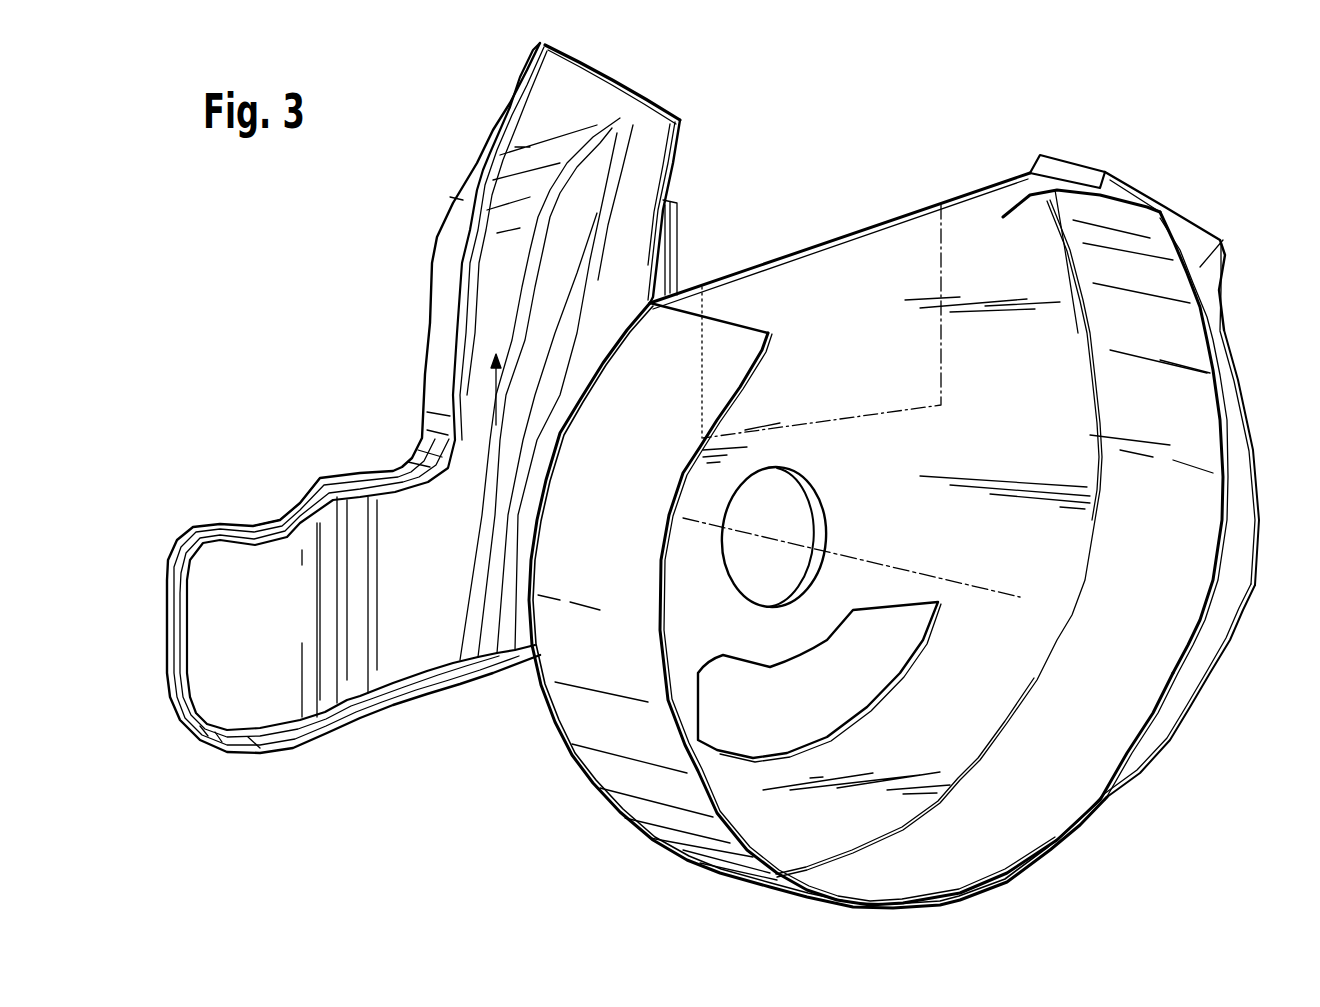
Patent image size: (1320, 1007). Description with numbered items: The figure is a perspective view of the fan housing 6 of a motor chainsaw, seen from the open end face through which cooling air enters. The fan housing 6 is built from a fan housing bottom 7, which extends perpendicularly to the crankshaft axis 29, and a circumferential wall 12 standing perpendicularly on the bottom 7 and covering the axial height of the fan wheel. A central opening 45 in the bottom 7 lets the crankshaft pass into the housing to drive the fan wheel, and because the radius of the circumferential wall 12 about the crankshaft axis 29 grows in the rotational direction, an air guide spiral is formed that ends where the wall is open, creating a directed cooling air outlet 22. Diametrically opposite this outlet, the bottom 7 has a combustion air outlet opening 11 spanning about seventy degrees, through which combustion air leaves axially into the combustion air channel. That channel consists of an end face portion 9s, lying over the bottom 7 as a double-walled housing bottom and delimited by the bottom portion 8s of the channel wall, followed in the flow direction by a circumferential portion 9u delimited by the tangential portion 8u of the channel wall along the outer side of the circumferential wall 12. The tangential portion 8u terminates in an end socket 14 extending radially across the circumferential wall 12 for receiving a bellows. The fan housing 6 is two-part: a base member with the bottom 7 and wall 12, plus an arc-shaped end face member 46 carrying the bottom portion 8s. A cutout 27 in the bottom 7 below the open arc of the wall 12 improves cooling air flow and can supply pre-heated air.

The fan housing 6 is at (580, 810).
The fan housing bottom 7 is at (1012, 450).
The bottom portion of the channel wall 8s is at (437, 282).
The tangential portion of the channel wall 8u is at (1198, 683).
The end face portion of the combustion air channel 9s is at (470, 493).
The circumferential portion of the combustion air channel 9u is at (1241, 397).
The combustion air outlet opening 11 is at (829, 709).
The circumferential wall 12 is at (1073, 710).
The end socket 14 is at (1227, 238).
The cooling air outlet 22 is at (983, 212).
The cutout 27 is at (841, 288).
The crankshaft axis 29 is at (937, 570).
The central opening 45 is at (803, 520).
The end face member 46 is at (304, 480).